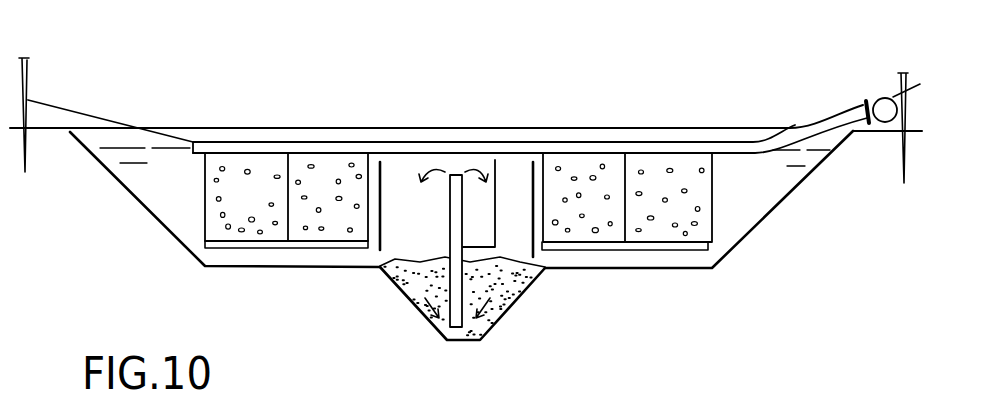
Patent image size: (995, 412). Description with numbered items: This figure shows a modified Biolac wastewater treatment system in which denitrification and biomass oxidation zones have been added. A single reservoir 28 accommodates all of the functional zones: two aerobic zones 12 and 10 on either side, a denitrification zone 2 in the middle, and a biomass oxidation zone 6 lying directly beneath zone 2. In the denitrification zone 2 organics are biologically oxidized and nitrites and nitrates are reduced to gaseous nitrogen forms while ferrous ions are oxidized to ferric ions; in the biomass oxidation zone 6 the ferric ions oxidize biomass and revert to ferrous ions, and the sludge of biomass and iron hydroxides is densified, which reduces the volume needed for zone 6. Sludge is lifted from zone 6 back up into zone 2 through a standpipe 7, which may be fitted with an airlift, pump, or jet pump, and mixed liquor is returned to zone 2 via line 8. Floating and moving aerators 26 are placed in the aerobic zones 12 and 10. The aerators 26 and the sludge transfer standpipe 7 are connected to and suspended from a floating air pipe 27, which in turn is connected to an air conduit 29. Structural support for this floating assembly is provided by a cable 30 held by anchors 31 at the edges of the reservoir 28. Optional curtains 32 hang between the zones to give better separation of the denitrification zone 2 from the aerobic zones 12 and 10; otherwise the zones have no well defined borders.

The denitrification zone 2 is at (428, 233).
The biomass oxidation zone 6 is at (423, 292).
The standpipe 7 is at (440, 330).
The return line 8 is at (457, 168).
The aerobic zone 10 is at (665, 207).
The aerobic zone 12 is at (268, 213).
The floating aerators 26 is at (325, 243).
The floating air pipe 27 is at (392, 152).
The reservoir 28 is at (165, 228).
The air conduit 29 is at (887, 102).
The cable 30 is at (88, 117).
The anchors 31 is at (28, 100).
The curtains 32 is at (377, 175).